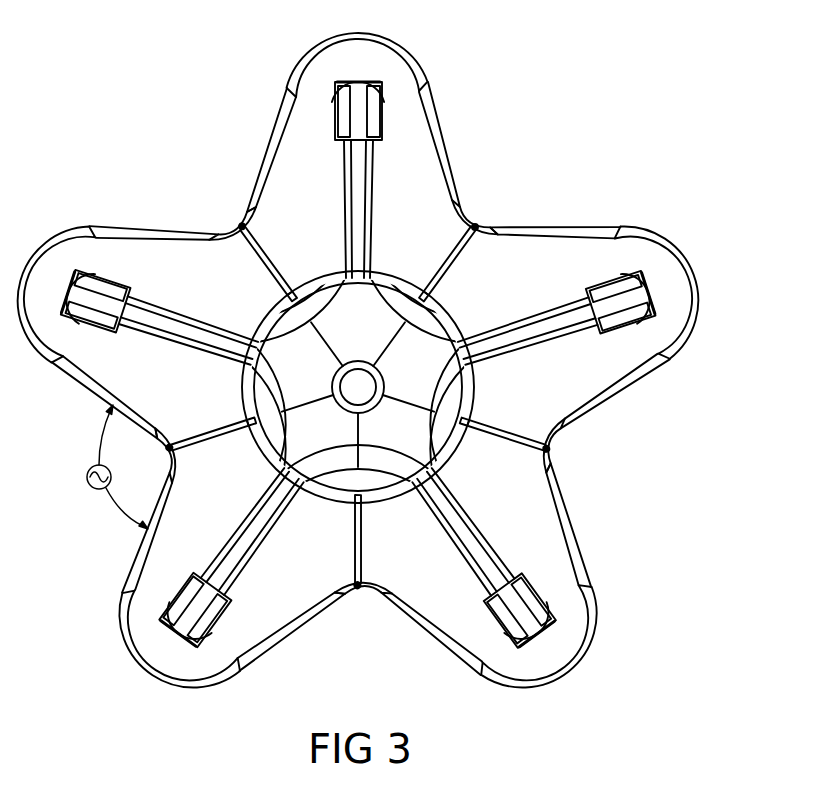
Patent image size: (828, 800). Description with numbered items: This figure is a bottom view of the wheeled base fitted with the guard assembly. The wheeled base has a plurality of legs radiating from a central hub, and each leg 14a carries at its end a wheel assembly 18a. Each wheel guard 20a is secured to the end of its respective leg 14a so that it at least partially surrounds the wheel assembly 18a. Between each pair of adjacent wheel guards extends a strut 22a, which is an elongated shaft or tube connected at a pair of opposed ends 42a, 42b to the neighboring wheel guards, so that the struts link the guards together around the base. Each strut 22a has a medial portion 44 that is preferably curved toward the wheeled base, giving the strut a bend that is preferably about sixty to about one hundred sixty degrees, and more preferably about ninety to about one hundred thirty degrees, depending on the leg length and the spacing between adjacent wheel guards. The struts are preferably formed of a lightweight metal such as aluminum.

The leg 14a is at (352, 205).
The wheel assembly 18a is at (378, 118).
The wheel guard 20a is at (318, 47).
The strut 22a is at (555, 232).
The end of strut 42a is at (655, 363).
The end of strut 42b is at (587, 567).
The medial portion 44 is at (550, 452).